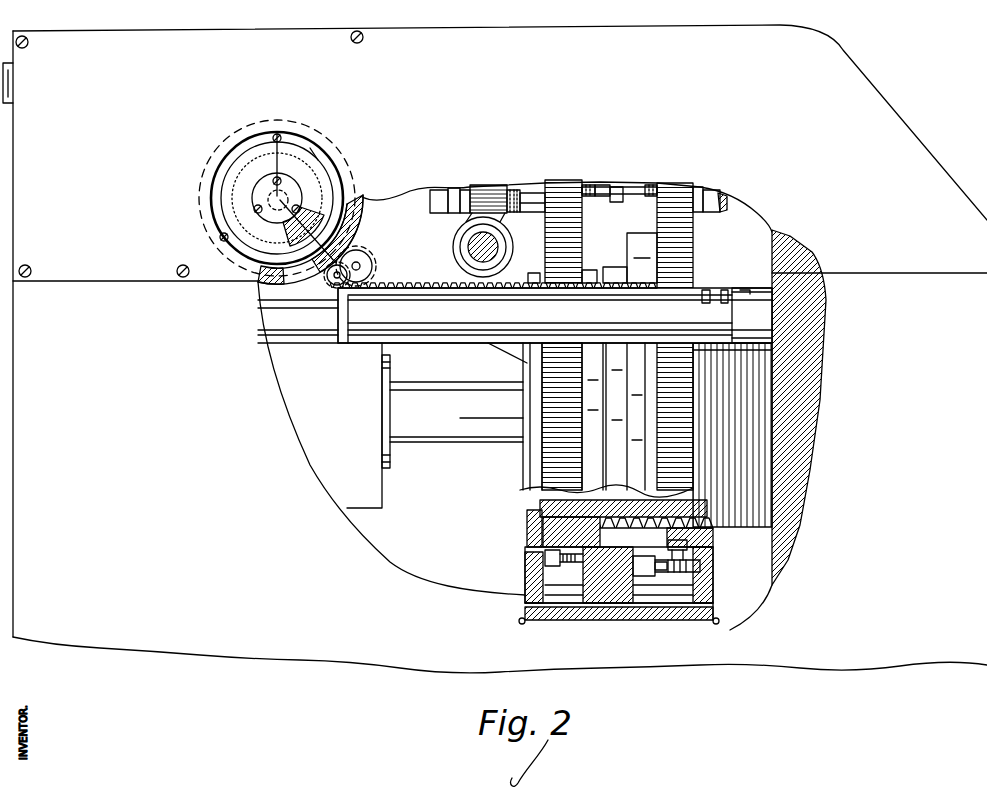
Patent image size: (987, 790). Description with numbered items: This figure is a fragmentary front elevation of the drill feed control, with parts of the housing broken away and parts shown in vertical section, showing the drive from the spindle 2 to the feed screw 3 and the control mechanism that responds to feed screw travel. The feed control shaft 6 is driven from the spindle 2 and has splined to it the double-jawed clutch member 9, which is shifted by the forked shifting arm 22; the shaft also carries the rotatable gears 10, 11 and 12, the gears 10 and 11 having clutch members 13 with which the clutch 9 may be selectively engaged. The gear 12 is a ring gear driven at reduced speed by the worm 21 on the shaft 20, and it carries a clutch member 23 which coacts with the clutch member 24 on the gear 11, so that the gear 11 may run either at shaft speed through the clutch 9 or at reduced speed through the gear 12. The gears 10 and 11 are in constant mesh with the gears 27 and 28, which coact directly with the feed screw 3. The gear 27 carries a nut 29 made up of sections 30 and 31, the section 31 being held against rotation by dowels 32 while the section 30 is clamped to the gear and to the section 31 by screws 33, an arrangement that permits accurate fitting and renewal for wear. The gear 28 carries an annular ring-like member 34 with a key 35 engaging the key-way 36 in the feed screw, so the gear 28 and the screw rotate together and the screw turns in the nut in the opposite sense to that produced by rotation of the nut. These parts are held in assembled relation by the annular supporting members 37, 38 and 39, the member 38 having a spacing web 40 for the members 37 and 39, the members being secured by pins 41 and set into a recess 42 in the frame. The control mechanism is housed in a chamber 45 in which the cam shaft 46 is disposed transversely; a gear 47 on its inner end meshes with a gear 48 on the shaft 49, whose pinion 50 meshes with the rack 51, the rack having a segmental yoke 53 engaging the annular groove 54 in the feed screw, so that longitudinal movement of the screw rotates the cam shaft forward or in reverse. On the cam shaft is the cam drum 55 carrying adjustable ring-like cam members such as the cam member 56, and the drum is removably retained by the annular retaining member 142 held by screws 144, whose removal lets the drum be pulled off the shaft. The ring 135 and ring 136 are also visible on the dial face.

The spindle 2 is at (437, 397).
The feed screw 3 is at (707, 288).
The feed control shaft 6 is at (277, 134).
The double-jawed clutch member 9 is at (607, 185).
The gear 10 is at (680, 195).
The gear 11 is at (555, 195).
The ring gear 12 is at (457, 128).
The clutch members 13 is at (585, 185).
The shaft 20 is at (469, 254).
The worm 21 is at (453, 246).
The forked shifting arm 22 is at (623, 199).
The clutch member 23 is at (511, 190).
The clutch member 24 is at (530, 212).
The gear 27 is at (680, 262).
The gear 28 is at (557, 443).
The nut 29 is at (647, 562).
The nut section 30 is at (622, 557).
The nut section 31 is at (707, 537).
The dowels 32 is at (700, 558).
The screws 33 is at (665, 575).
The annular ring-like member 34 is at (530, 546).
The key 35 is at (543, 530).
The key-way 36 is at (776, 545).
The annular supporting member 37 is at (530, 580).
The annular supporting member 38 is at (597, 590).
The annular supporting member 39 is at (712, 596).
The spacing web 40 is at (553, 620).
The pins 41 is at (530, 613).
The recess 42 is at (715, 618).
The chamber 45 is at (263, 283).
The cam shaft 46 is at (345, 182).
The gear 47 is at (352, 163).
The gear 48 is at (358, 245).
The shaft 49 is at (375, 271).
The pinion 50 is at (358, 258).
The rack 51 is at (428, 292).
The segmental yoke 53 is at (532, 374).
The annular groove 54 is at (535, 503).
The cam drum 55 is at (280, 221).
The cam member 56 is at (272, 242).
The graduated ring 135 is at (232, 197).
The ring 136 is at (225, 183).
The annular retaining member 142 is at (310, 148).
The screws 144 is at (277, 134).